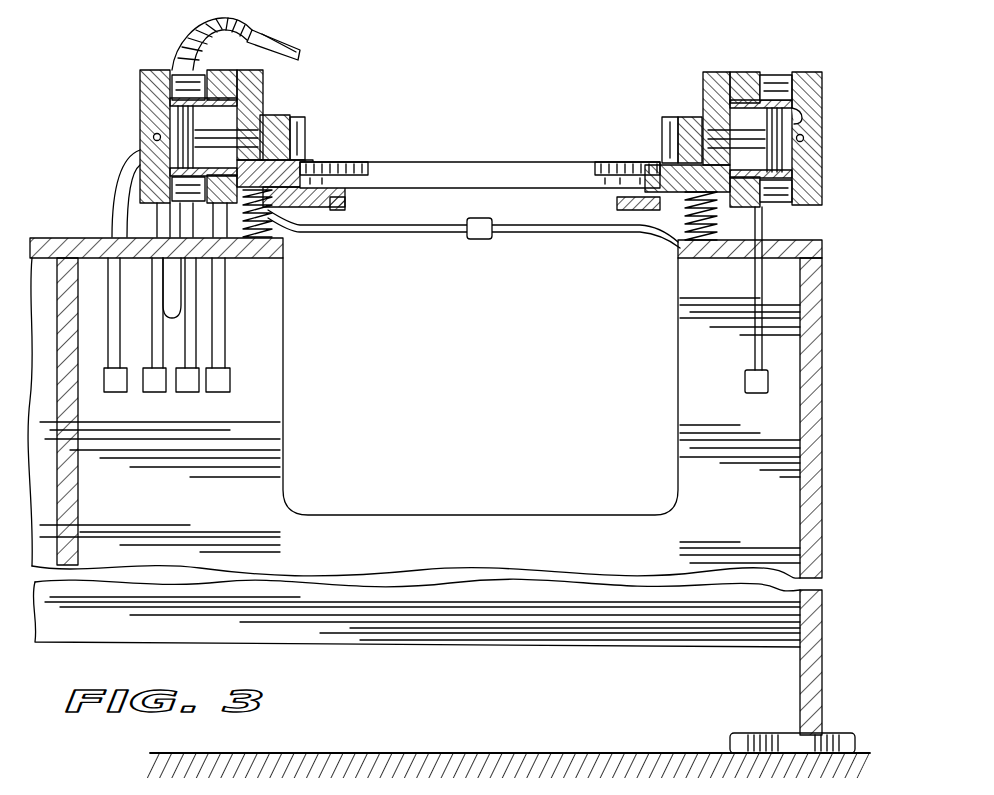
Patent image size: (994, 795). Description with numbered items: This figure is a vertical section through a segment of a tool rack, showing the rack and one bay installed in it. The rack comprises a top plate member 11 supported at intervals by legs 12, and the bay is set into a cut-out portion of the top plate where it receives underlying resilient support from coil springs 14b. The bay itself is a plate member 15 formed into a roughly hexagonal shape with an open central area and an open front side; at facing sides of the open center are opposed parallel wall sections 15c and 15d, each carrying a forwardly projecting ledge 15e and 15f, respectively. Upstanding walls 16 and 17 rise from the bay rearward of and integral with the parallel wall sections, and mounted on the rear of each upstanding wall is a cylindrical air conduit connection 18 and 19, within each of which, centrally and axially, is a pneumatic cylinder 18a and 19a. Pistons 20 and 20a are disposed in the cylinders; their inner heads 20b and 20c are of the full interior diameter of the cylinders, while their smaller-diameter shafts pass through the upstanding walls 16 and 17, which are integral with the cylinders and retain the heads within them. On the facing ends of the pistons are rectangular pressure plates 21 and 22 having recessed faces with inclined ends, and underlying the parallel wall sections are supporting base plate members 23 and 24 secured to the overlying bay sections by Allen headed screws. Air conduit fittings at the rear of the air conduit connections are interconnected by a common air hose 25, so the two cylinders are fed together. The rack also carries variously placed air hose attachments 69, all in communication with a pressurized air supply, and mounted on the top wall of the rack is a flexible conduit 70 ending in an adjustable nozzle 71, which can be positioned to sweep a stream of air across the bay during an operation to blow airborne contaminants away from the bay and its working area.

The top plate member 11 is at (60, 237).
The legs 12 is at (78, 532).
The coil springs 14b is at (280, 212).
The plate member 15 is at (520, 162).
The parallel wall section 15c is at (258, 100).
The parallel wall section 15d is at (716, 72).
The forwardly projecting ledge 15e is at (340, 160).
The forwardly projecting ledge 15f is at (645, 162).
The upstanding wall 16 is at (232, 45).
The upstanding wall 17 is at (750, 72).
The cylindrical air conduit connection 18 is at (158, 72).
The pneumatic cylinder 18a is at (140, 104).
The cylindrical air conduit connection 19 is at (812, 72).
The pneumatic cylinder 19a is at (804, 113).
The piston 20 is at (168, 148).
The piston 20a is at (785, 150).
The piston head 20b is at (176, 125).
The piston head 20c is at (776, 105).
The rectangular pressure plate 21 is at (285, 112).
The rectangular pressure plate 22 is at (690, 118).
The supporting base plate member 23 is at (305, 125).
The supporting base plate member 24 is at (666, 128).
The common air hose 25 is at (495, 229).
The air hose attachments 69 is at (762, 394).
The flexible conduit 70 is at (200, 16).
The adjustable nozzle 71 is at (285, 33).